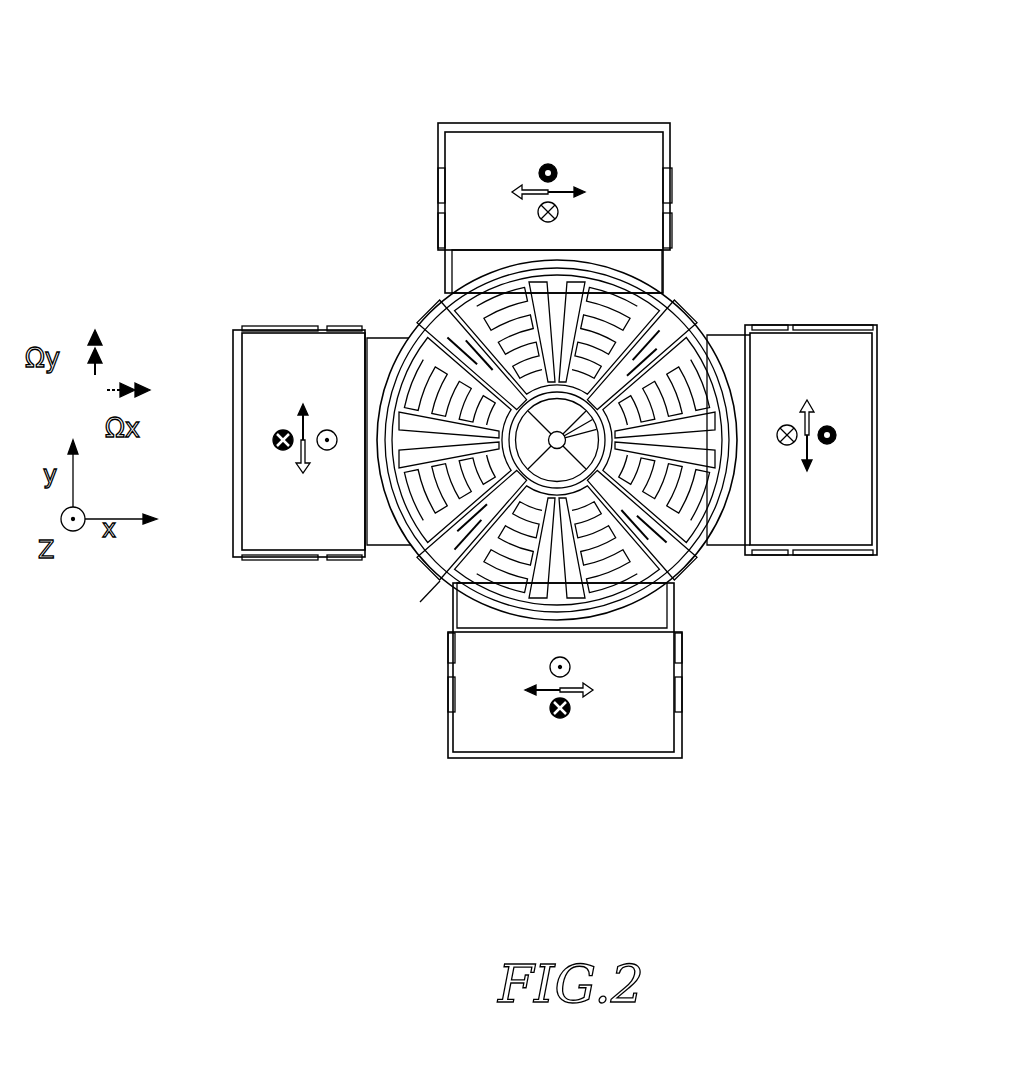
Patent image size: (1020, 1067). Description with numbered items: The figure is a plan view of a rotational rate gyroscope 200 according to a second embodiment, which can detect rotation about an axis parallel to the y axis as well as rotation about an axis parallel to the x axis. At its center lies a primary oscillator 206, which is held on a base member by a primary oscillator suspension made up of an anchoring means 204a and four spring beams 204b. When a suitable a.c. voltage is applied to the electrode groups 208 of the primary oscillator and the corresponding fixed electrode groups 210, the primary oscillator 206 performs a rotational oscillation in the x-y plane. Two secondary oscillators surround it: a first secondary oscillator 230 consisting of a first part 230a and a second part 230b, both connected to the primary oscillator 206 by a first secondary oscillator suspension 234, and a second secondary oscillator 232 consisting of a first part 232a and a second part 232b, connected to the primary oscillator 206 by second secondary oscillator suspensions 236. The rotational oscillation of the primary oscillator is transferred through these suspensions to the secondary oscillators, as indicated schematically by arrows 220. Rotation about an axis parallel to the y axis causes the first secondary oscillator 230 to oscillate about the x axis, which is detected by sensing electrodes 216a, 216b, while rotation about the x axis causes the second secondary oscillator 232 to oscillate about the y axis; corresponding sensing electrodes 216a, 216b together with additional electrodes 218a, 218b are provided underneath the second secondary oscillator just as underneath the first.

The rotational rate gyroscope 200 is at (652, 70).
The anchoring means 204a is at (670, 314).
The spring beams 204b is at (447, 540).
The primary oscillator 206 is at (437, 327).
The electrode groups of the primary oscillator 208 is at (673, 575).
The fixed electrode groups 210 is at (700, 520).
The sensing electrode 216a is at (438, 168).
The sensing electrode 216b is at (448, 700).
The additional electrode 218a is at (438, 227).
The additional electrode 218b is at (682, 665).
The arrows 220 is at (545, 690).
The first secondary oscillator 230 is at (521, 110).
The first part of the first secondary oscillator 230a is at (640, 183).
The second part of the first secondary oscillator 230b is at (650, 728).
The second secondary oscillator 232 is at (218, 412).
The first part of the second secondary oscillator 232a is at (260, 463).
The second part of the second secondary oscillator 232b is at (842, 513).
The first secondary oscillator suspension 234 is at (668, 268).
The second secondary oscillator suspensions 236 is at (742, 330).